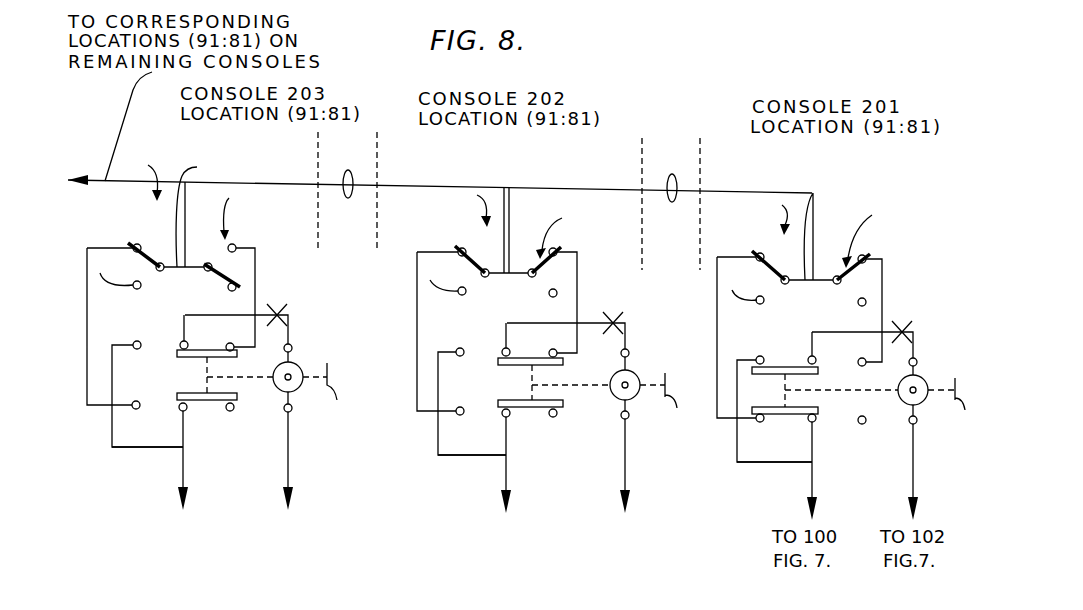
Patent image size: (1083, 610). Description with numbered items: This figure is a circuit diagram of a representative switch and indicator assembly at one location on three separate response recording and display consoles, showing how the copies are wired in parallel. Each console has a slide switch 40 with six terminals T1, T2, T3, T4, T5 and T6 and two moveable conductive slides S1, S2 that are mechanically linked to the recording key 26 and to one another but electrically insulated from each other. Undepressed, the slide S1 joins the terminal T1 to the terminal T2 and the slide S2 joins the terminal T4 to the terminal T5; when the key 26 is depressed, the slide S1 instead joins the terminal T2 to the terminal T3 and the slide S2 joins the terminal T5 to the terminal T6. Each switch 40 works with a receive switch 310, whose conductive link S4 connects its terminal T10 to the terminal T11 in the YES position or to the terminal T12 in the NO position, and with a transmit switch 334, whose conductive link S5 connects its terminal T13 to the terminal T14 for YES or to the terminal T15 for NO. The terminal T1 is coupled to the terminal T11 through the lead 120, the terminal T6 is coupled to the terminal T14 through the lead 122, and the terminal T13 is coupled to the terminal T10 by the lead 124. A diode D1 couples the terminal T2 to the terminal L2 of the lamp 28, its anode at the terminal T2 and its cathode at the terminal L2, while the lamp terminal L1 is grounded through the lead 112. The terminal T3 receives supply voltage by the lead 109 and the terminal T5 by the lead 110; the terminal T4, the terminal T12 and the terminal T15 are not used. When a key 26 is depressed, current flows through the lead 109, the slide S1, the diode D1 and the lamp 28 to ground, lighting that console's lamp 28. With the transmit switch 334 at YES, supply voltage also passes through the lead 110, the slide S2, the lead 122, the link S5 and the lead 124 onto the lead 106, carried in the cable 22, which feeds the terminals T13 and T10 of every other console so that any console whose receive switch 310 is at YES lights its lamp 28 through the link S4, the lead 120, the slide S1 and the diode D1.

The cable 22 is at (360, 160).
The recording key 26 is at (642, 398).
The lamp 28 is at (300, 366).
The slide switch 40 is at (230, 376).
The lead 106 is at (418, 186).
The lead 109 is at (150, 448).
The lead 110 is at (182, 470).
The lead 112 is at (290, 485).
The lead 120 is at (255, 283).
The lead 122 is at (86, 262).
The lead 124 is at (828, 177).
The receive switch 310 is at (564, 229).
The transmit switch 334 is at (456, 190).
The diode D1 is at (280, 308).
The lamp terminal L1 is at (291, 413).
The lamp terminal L2 is at (292, 344).
The slide S1 is at (178, 359).
The slide S2 is at (184, 394).
The conductive link S4 is at (207, 276).
The conductive link S5 is at (456, 302).
The terminal T1 is at (231, 344).
The terminal T2 is at (182, 341).
The terminal T3 is at (134, 342).
The terminal T4 is at (230, 411).
The terminal T5 is at (181, 410).
The terminal T6 is at (133, 408).
The terminal T10 is at (205, 266).
The terminal T11 is at (233, 246).
The terminal T12 is at (232, 291).
The terminal T13 is at (160, 263).
The terminal T14 is at (134, 244).
The terminal T15 is at (424, 275).